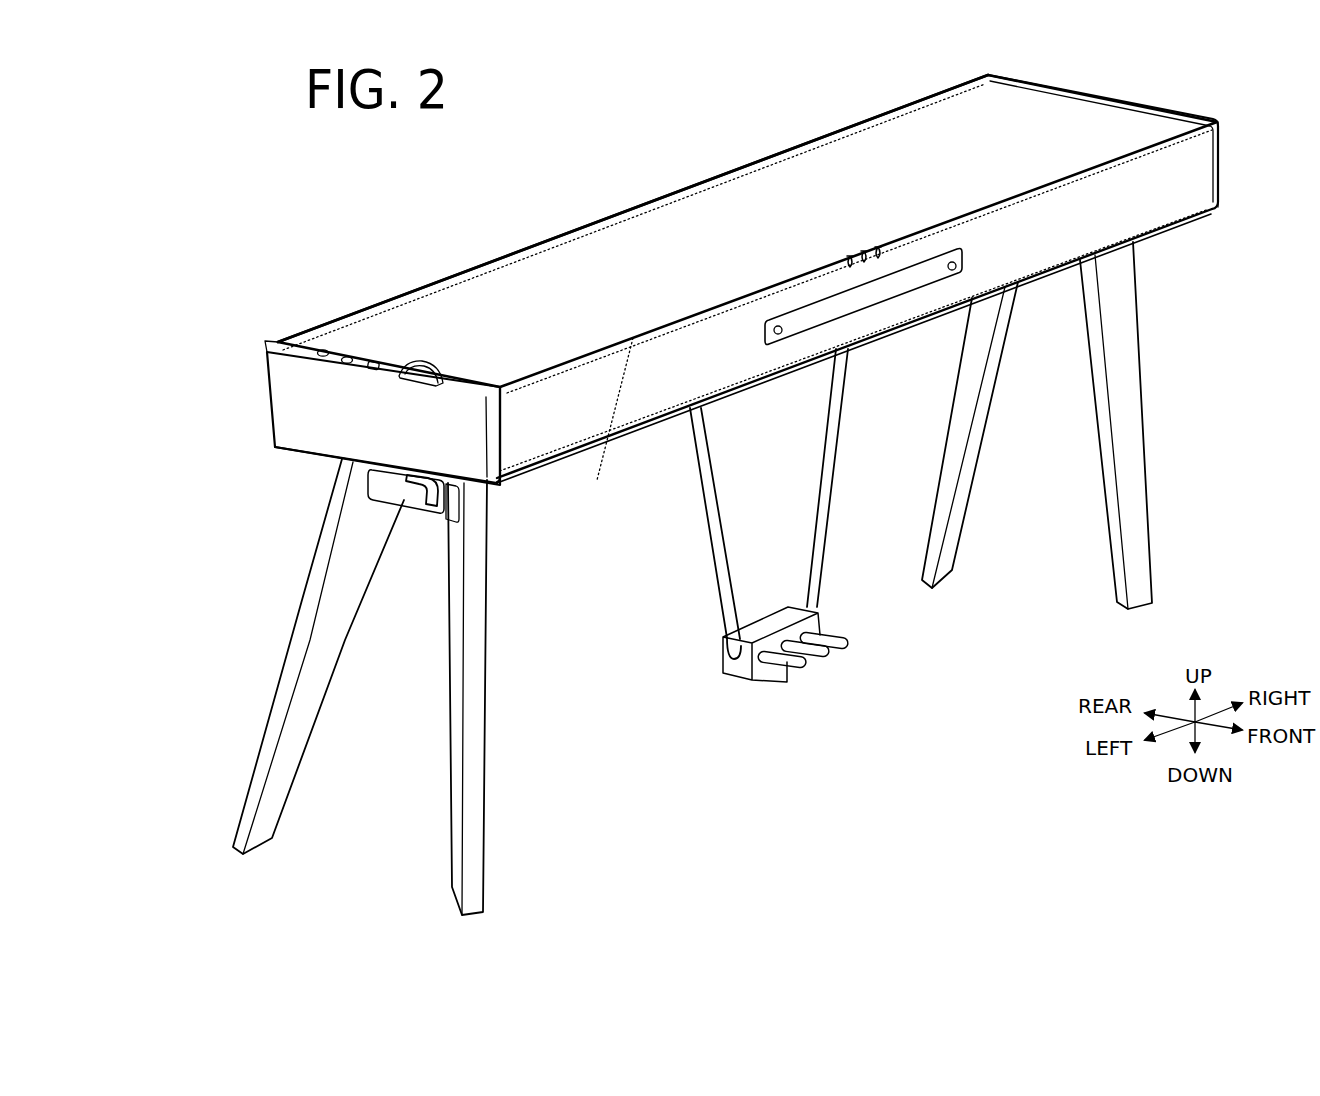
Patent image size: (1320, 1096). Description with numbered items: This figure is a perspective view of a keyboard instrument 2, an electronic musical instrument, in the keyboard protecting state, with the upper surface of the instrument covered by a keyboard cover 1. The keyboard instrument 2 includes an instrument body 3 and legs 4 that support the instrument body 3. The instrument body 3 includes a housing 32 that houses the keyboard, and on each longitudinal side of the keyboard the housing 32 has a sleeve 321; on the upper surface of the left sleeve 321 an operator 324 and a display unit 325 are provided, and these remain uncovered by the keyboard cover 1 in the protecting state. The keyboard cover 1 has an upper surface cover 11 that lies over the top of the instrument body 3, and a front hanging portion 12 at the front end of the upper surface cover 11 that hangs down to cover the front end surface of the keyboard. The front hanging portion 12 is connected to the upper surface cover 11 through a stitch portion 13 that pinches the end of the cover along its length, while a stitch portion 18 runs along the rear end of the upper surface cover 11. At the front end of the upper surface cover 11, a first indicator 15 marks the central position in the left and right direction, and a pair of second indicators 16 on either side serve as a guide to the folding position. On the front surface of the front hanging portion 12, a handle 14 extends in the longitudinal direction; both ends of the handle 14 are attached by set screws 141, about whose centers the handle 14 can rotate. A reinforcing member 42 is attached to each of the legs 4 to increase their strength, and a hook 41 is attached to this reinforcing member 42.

The keyboard cover 1 is at (858, 108).
The keyboard instrument 2 is at (189, 306).
The instrument body 3 is at (262, 389).
The legs 4 is at (297, 597).
The upper surface cover 11 is at (1072, 108).
The front hanging portion 12 is at (1199, 182).
The stitch portion 13 is at (565, 422).
The handle 14 is at (882, 310).
The first indicator 15 is at (859, 250).
The second indicators 16 is at (846, 257).
The stitch portion 18 is at (542, 237).
The housing 32 is at (1199, 106).
The hook 41 is at (423, 503).
The reinforcing member 42 is at (441, 509).
The set screws 141 is at (776, 342).
The sleeve 321 is at (494, 462).
The operator 324 is at (415, 366).
The display unit 325 is at (375, 362).